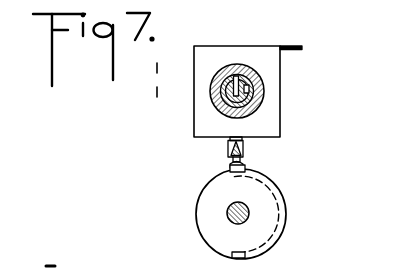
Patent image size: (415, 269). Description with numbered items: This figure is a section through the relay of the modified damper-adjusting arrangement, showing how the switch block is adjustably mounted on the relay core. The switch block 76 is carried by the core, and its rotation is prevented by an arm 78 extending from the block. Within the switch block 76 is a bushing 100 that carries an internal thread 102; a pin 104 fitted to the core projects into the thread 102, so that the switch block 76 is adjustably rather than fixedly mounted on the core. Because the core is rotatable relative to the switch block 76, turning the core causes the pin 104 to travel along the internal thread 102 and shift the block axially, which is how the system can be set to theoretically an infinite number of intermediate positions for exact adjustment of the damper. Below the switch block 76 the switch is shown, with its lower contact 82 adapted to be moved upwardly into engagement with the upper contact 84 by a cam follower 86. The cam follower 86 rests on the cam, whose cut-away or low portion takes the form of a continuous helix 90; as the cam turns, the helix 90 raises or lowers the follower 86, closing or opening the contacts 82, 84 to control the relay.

The switch block 76 is at (211, 57).
The arm 78 is at (296, 46).
The lower contact 82 is at (244, 146).
The upper contact 84 is at (228, 139).
The cam follower 86 is at (231, 163).
The continuous helix 90 is at (268, 238).
The bushing 100 is at (213, 76).
The internal thread 102 is at (218, 82).
The pin 104 is at (250, 84).